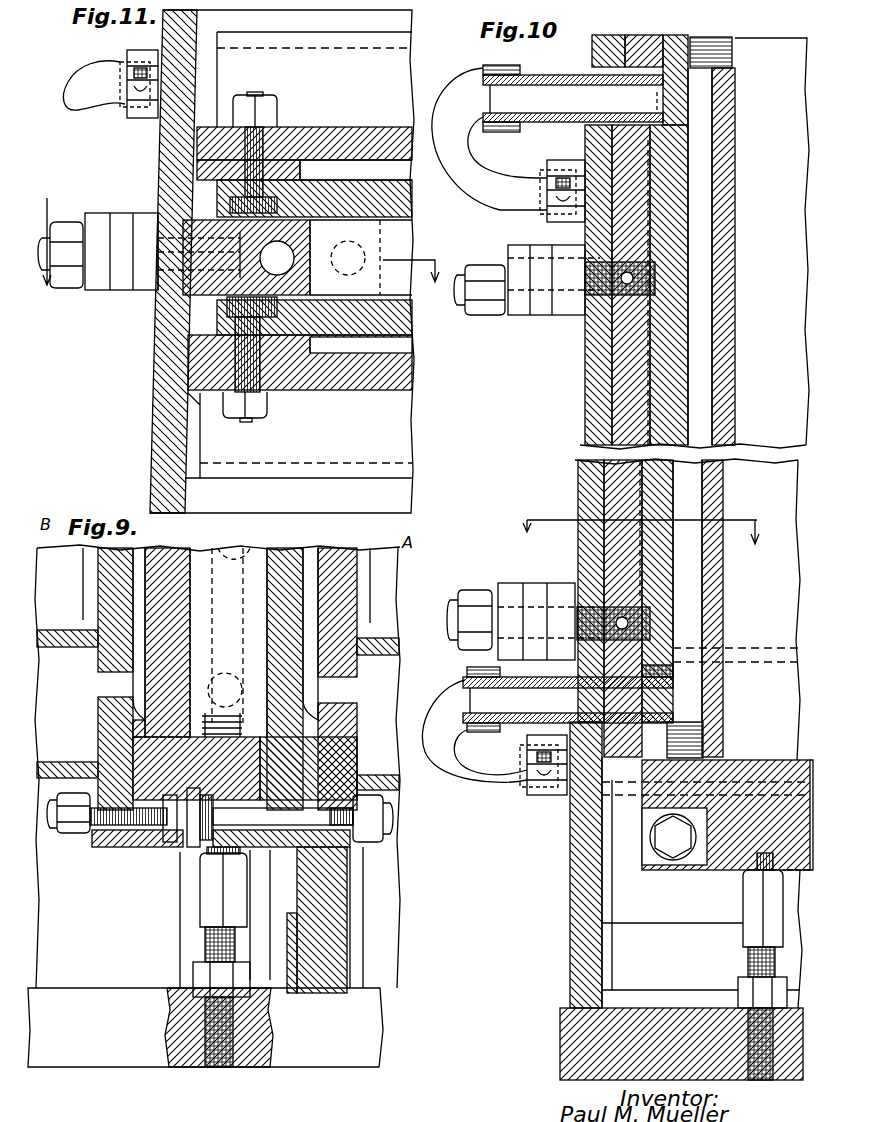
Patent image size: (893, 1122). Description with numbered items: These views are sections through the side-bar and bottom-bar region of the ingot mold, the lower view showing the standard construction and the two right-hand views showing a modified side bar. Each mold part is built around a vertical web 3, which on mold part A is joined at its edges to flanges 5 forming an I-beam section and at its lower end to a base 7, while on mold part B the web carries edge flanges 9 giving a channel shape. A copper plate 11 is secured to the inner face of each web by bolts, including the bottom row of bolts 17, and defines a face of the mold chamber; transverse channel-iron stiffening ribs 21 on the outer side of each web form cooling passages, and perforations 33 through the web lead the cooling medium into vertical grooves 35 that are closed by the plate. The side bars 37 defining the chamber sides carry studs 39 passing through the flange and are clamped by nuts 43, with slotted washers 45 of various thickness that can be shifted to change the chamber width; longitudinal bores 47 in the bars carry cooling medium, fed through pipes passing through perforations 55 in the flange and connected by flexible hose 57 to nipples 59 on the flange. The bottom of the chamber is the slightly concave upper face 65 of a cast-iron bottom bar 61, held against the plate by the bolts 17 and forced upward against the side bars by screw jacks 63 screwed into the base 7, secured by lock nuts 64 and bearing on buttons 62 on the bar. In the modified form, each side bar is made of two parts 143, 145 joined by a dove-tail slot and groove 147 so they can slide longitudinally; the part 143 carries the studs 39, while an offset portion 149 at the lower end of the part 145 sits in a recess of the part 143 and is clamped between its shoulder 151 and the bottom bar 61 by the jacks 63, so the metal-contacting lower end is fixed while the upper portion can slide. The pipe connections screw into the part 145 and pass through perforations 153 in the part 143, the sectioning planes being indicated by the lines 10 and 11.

In FIG. 11, the web 3 is at (410, 380).
In FIG. 10, the web 3 is at (796, 128).
In FIG. 9, the web 3 is at (337, 943).
In FIG. 11, the edge flange 5 is at (167, 134).
In FIG. 10, the edge flange 5 is at (585, 411).
In FIG. 9, the edge flange 5 is at (183, 874).
In FIG. 10, the base 7 is at (670, 1018).
In FIG. 9, the base 7 is at (100, 1000).
In FIG. 11, the edge flange 9 is at (160, 401).
In FIG. 9, the edge flange 9 is at (50, 832).
In FIG. 11, the section line 10- 10 is at (244, 232).
In FIG. 10, the plate-like member 11 is at (643, 520).
In FIG. 9, the plate-like member 11 is at (190, 596).
In FIG. 10, the bolt 17 is at (673, 848).
In FIG. 9, the bolt 17 is at (121, 822).
In FIG. 11, the stiffening rib 21 is at (310, 470).
In FIG. 9, the stiffening rib 21 is at (58, 632).
In FIG. 9, the perforation 33 is at (98, 688).
In FIG. 9, the groove 35 is at (139, 556).
In FIG. 9, the side bar 37 is at (258, 555).
In FIG. 10, the stud 39 is at (603, 292).
In FIG. 11, the nut 43 is at (68, 283).
In FIG. 11, the washer 45 is at (114, 280).
In FIG. 11, the longitudinal bore 47 is at (296, 250).
In FIG. 10, the longitudinal bore 47 is at (703, 230).
In FIG. 9, the longitudinal bore 47 is at (224, 550).
In FIG. 10, the perforation 55 is at (592, 52).
In FIG. 11, the flexible hose 57 is at (90, 72).
In FIG. 11, the pipe nipple 59 is at (120, 110).
In FIG. 10, the bottom bar 61 is at (765, 760).
In FIG. 9, the bottom bar 61 is at (240, 694).
In FIG. 10, the button 62 is at (757, 869).
In FIG. 9, the button 62 is at (205, 850).
In FIG. 10, the screw jack 63 is at (755, 928).
In FIG. 9, the screw jack 63 is at (205, 897).
In FIG. 10, the lock nut 64 is at (750, 990).
In FIG. 9, the lock nut 64 is at (196, 973).
In FIG. 9, the upper face 65 is at (205, 712).
In FIG. 11, the side bar part 143 is at (138, 283).
In FIG. 10, the side bar part 143 is at (620, 385).
In FIG. 11, the side bar part 145 is at (302, 270).
In FIG. 10, the side bar part 145 is at (722, 323).
In FIG. 11, the dove-tail slot and groove 147 is at (210, 242).
In FIG. 10, the dove-tail slot and groove 147 is at (648, 420).
In FIG. 10, the offset portion 149 is at (655, 672).
In FIG. 10, the shoulder 151 is at (617, 688).
In FIG. 10, the perforation 153 is at (646, 70).